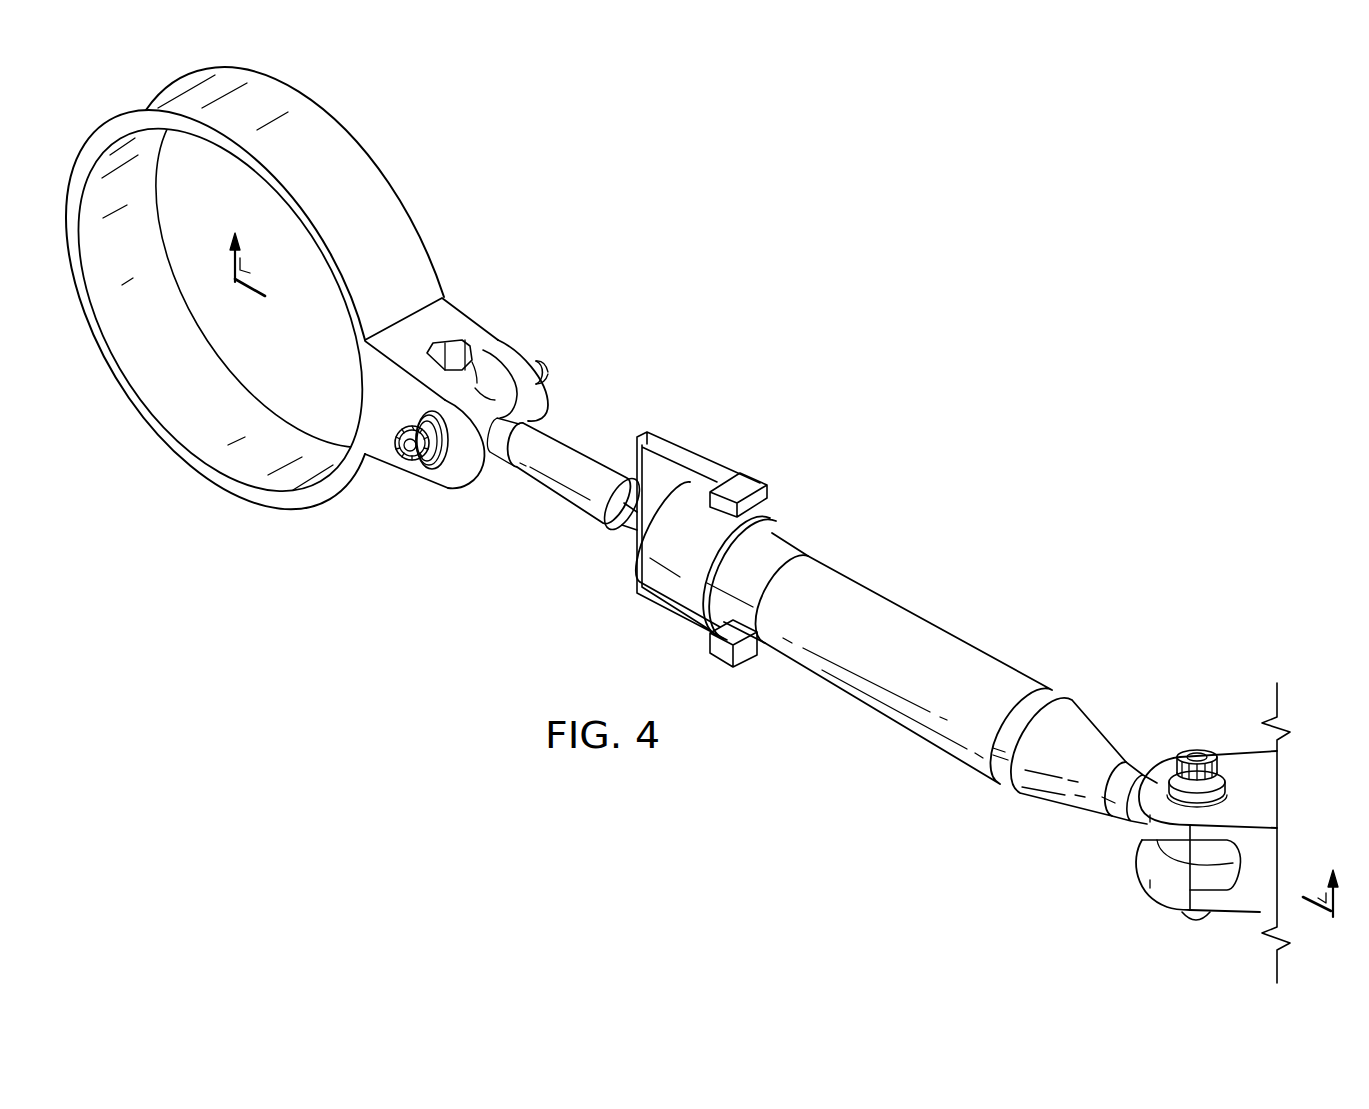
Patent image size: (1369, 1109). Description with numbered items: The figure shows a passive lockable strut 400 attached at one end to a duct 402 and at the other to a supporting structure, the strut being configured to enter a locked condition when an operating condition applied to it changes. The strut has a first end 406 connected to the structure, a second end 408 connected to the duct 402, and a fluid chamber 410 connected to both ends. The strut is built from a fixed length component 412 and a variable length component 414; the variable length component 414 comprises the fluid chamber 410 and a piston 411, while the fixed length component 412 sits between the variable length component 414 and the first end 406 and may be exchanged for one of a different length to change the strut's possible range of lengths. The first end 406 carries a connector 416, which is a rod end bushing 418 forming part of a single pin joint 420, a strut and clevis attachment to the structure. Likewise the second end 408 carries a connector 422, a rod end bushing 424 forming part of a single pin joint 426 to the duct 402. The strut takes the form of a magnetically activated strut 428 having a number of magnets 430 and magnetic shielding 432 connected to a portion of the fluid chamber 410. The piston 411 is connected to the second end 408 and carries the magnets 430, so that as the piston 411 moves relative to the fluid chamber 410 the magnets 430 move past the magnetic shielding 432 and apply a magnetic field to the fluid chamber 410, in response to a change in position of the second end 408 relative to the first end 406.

The passive lockable strut 400 is at (1006, 521).
The duct 402 is at (466, 310).
The first end 406 is at (1128, 868).
The second end 408 is at (481, 497).
The fluid chamber 410 is at (792, 533).
The piston 411 is at (629, 534).
The fixed length component 412 is at (908, 601).
The variable length component 414 is at (614, 602).
The connector 416 is at (1195, 757).
The rod end bushing 418 is at (1162, 906).
The single pin joint 420 is at (1221, 758).
The connector 422 is at (400, 460).
The rod end bushing 424 is at (477, 383).
The single pin joint 426 is at (548, 371).
The magnetically activated strut 428 is at (1016, 622).
The number of magnets 430 is at (758, 488).
The magnetic shielding 432 is at (676, 508).